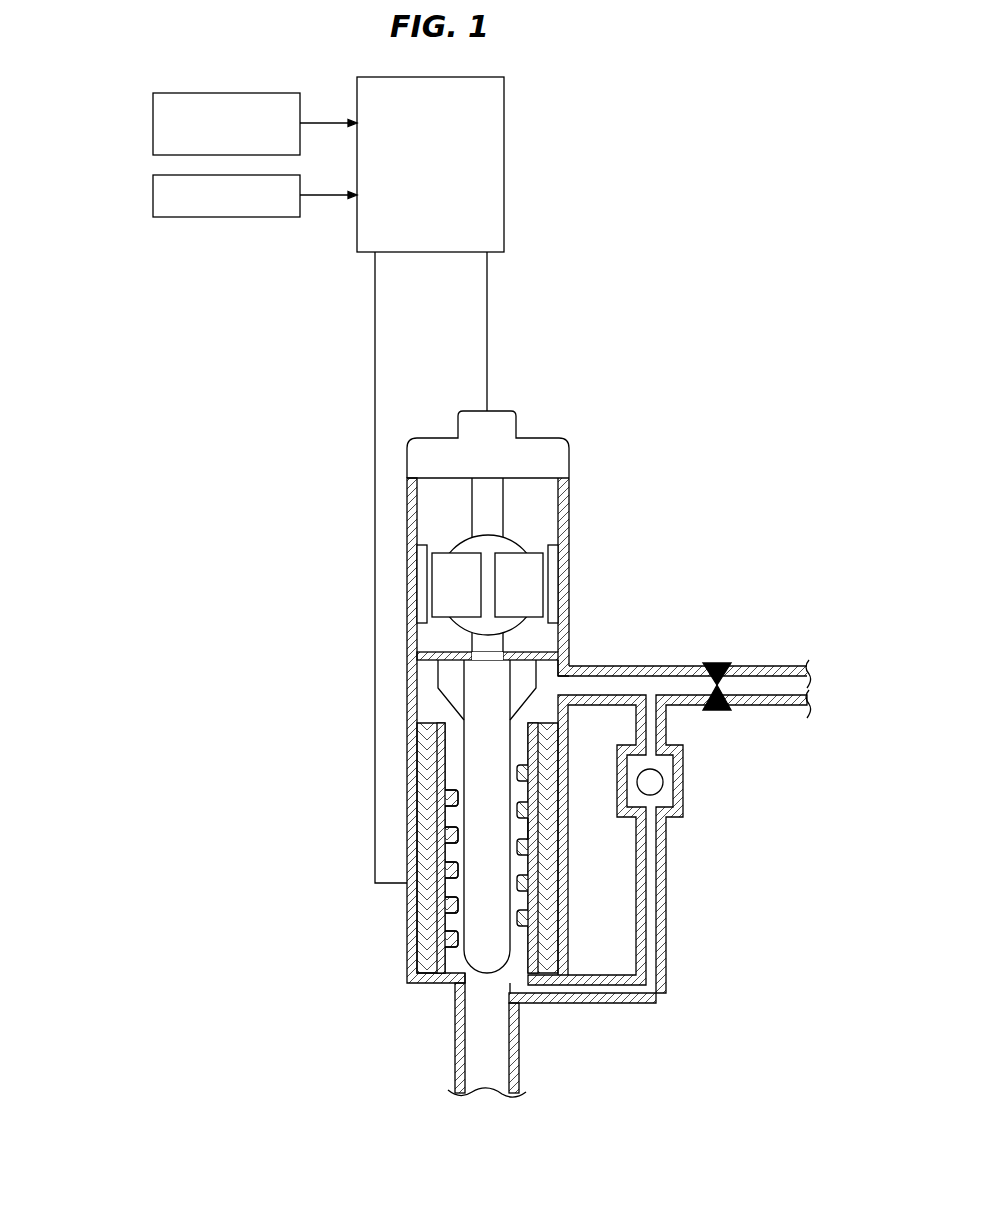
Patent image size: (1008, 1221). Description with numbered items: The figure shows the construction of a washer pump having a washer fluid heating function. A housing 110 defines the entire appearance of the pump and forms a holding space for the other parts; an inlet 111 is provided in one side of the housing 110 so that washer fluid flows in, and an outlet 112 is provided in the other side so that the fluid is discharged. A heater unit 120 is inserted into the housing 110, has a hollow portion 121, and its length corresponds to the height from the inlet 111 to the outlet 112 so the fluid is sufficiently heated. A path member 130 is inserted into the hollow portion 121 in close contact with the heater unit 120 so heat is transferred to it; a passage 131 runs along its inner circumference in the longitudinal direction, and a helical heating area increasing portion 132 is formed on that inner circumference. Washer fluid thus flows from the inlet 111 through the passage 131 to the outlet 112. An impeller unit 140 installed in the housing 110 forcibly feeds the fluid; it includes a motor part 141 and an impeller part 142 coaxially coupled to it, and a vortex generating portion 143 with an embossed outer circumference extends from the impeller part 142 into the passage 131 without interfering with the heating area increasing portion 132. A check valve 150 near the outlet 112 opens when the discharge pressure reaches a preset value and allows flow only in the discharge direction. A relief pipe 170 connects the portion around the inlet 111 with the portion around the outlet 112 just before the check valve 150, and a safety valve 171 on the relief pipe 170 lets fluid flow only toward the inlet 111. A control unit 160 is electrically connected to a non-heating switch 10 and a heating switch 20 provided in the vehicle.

The non-heating switch 10 is at (153, 124).
The heating switch 20 is at (153, 195).
The control unit 160 is at (504, 163).
The housing 110 is at (565, 520).
The inlet 111 is at (462, 1042).
The outlet 112 is at (737, 668).
The heater unit 120 is at (425, 797).
The hollow portion 121 is at (447, 836).
The path member 130 is at (443, 765).
The passage 131 is at (520, 966).
The heating area increasing portion 132 is at (530, 833).
The impeller unit 140 is at (551, 671).
The motor part 141 is at (532, 580).
The impeller part 142 is at (453, 673).
The vortex generating portion 143 is at (500, 897).
The check valve 150 is at (713, 663).
The relief pipe 170 is at (660, 983).
The safety valve 171 is at (652, 783).